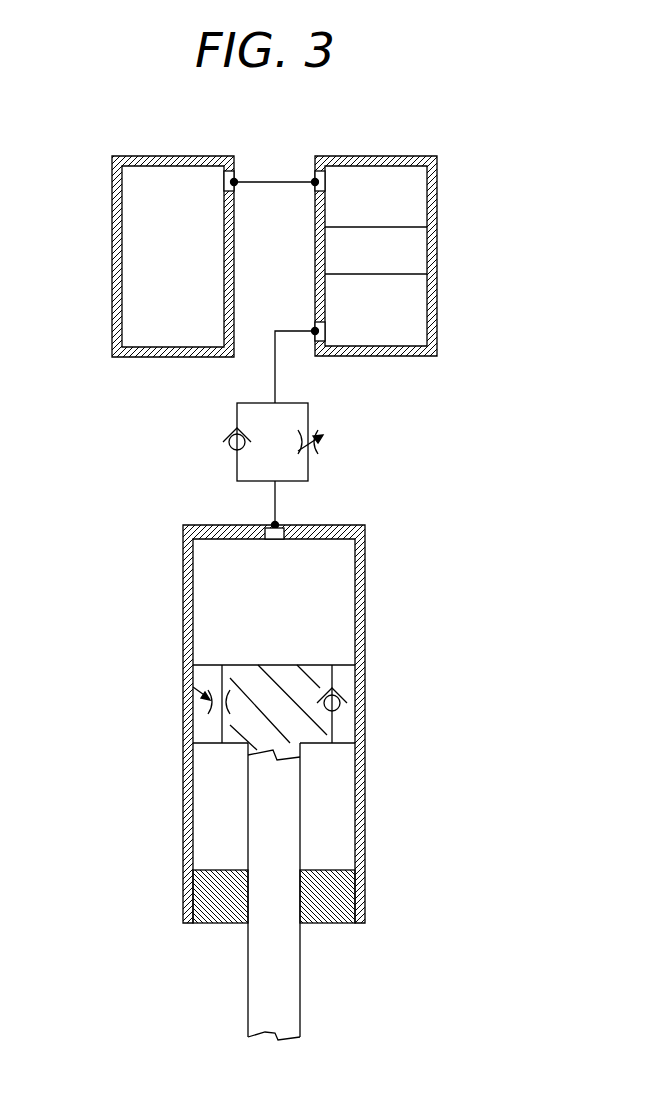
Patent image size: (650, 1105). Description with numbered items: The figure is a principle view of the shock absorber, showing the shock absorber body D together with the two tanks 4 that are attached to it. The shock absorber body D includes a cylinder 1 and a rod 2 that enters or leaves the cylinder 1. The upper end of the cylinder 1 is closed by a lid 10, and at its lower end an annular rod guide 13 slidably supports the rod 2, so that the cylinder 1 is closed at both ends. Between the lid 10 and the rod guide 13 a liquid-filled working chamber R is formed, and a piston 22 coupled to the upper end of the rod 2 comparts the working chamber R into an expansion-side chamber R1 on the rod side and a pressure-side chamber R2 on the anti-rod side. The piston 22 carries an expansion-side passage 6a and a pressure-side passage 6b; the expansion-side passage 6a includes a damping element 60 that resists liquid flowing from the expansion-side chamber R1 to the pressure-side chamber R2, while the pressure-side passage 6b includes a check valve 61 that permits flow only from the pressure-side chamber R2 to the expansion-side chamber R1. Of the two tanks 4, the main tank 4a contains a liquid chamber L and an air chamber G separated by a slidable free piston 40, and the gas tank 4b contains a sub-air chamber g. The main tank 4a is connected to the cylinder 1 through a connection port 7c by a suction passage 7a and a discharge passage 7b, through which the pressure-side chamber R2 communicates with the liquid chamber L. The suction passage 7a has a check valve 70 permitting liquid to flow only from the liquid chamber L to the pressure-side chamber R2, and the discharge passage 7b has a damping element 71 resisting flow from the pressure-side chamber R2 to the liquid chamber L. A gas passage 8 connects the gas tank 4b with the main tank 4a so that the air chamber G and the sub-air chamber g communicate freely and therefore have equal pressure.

The tank 4 is at (282, 248).
The main tank 4a is at (419, 248).
The gas tank 4b is at (137, 249).
The gas passage 8 is at (275, 179).
The connection port 7c is at (312, 323).
The suction passage 7a is at (236, 415).
The discharge passage 7b is at (310, 416).
The check valve 70 is at (228, 448).
The damping element 71 is at (322, 450).
The free piston 40 is at (415, 256).
The lid 10 is at (213, 524).
The cylinder 1 is at (262, 711).
The expansion-side passage 6a is at (222, 674).
The pressure-side passage 6b is at (332, 674).
The damping element 60 is at (197, 704).
The check valve 61 is at (344, 708).
The piston 22 is at (194, 752).
The rod 2 is at (247, 983).
The rod guide 13 is at (322, 925).
The shock absorber body D is at (247, 770).
The working chamber R is at (338, 789).
The expansion-side chamber R1 is at (220, 806).
The pressure-side chamber R2 is at (271, 606).
The sub-air chamber g is at (173, 254).
The air chamber G is at (375, 195).
The liquid chamber L is at (376, 312).